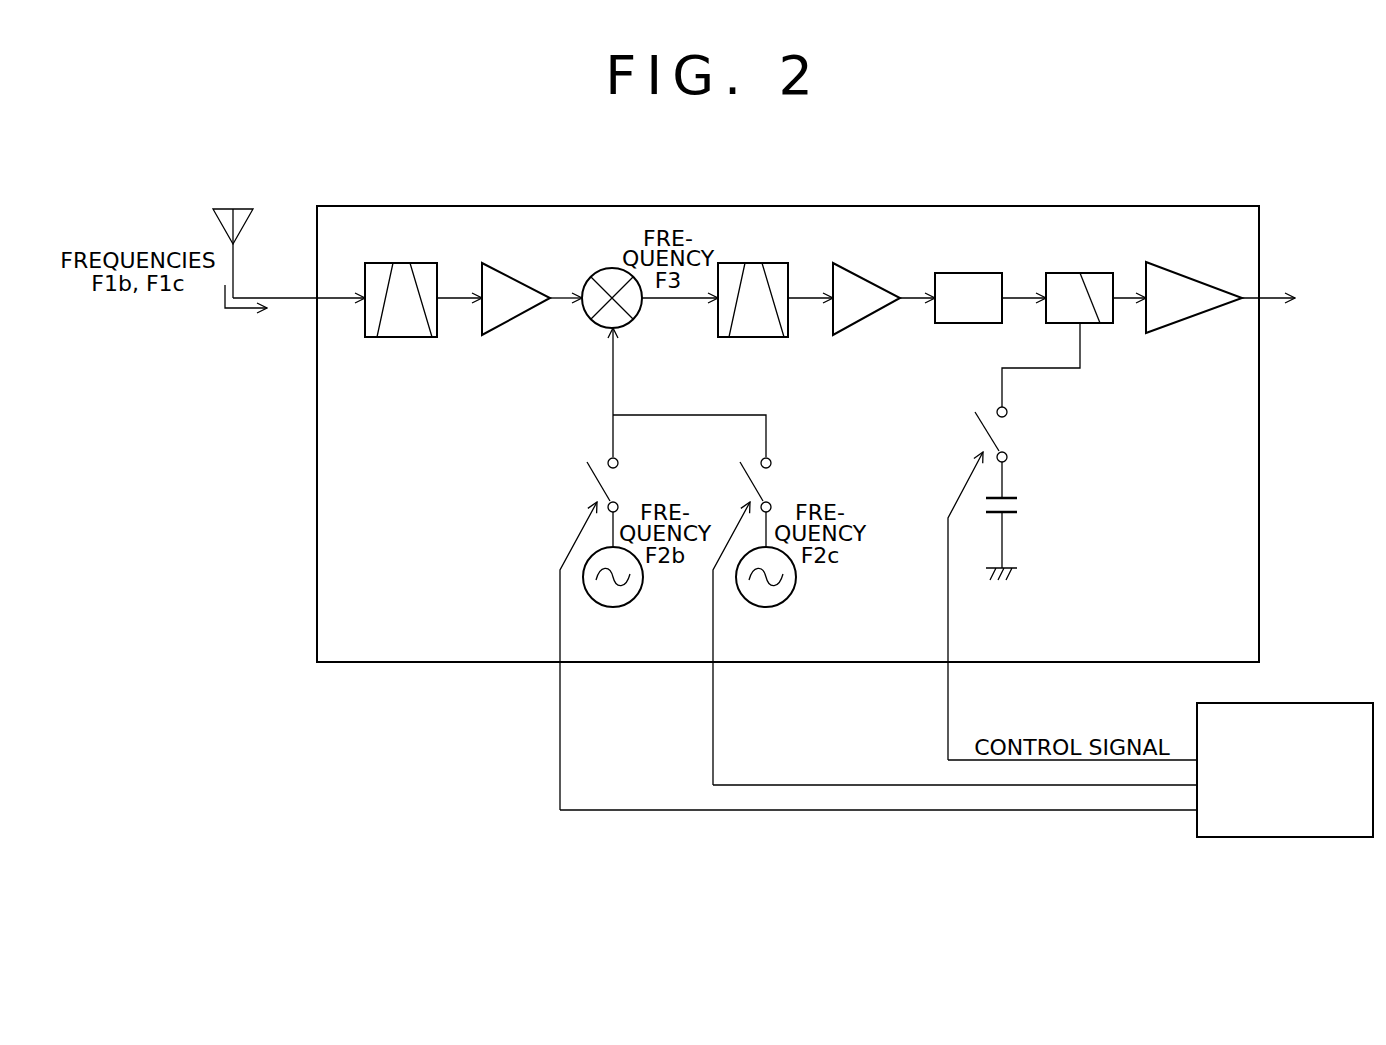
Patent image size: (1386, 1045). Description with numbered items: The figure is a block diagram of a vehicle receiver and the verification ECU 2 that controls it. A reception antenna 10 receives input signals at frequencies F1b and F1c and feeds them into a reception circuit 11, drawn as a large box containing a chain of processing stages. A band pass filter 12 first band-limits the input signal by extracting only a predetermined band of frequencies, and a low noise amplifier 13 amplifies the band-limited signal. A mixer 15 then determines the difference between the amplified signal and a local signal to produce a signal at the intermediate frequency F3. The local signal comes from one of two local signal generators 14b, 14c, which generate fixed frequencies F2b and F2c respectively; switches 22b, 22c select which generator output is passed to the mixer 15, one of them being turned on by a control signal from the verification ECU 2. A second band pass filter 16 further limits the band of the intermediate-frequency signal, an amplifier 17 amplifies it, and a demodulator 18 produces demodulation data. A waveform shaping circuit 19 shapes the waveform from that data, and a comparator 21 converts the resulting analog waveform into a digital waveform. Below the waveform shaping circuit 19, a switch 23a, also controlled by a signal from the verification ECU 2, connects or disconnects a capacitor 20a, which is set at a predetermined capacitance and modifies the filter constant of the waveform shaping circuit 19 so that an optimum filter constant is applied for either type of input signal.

The verification ECU 2 is at (1286, 703).
The reception antenna 10 is at (240, 207).
The reception circuit 11 is at (1050, 206).
The band pass filter 12 is at (417, 337).
The low noise amplifier 13 is at (512, 322).
The local signal generator 14b is at (628, 602).
The local signal generator 14c is at (781, 602).
The mixer 15 is at (632, 324).
The band pass filter 16 is at (772, 337).
The amplifier 17 is at (866, 322).
The demodulator 18 is at (970, 323).
The waveform shaping circuit 19 is at (1107, 323).
The capacitor 20a is at (1017, 512).
The comparator 21 is at (1188, 320).
The switch 22b is at (592, 478).
The switch 22c is at (745, 478).
The switch 23a is at (982, 427).